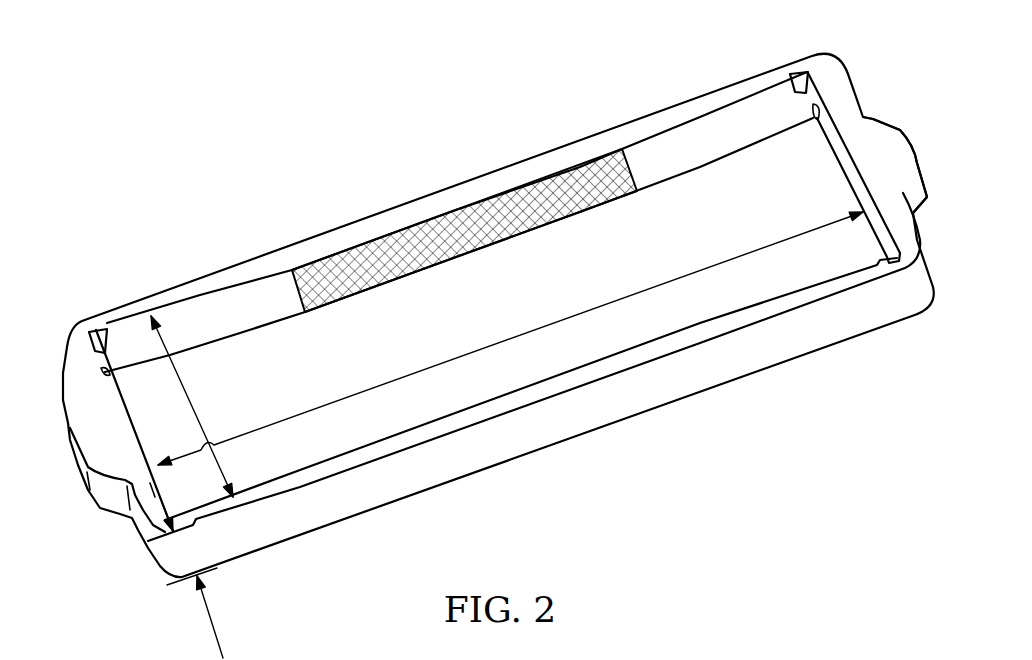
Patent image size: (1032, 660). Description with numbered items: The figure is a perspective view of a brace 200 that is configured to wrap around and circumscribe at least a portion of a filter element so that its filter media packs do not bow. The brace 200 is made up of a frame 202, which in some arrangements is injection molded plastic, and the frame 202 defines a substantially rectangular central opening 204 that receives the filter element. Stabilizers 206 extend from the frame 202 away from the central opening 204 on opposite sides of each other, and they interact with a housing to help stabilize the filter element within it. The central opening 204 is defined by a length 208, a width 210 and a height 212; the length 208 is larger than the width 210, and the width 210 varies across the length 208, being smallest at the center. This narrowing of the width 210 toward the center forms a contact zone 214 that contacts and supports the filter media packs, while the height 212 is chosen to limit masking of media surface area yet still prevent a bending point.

The brace 200 is at (476, 356).
The frame 202 is at (233, 277).
The central opening 204 is at (484, 303).
The stabilizers 206 is at (883, 147).
The length 208 is at (645, 290).
The width 210 is at (175, 378).
The height 212 is at (223, 658).
The contact zone 214 is at (438, 232).